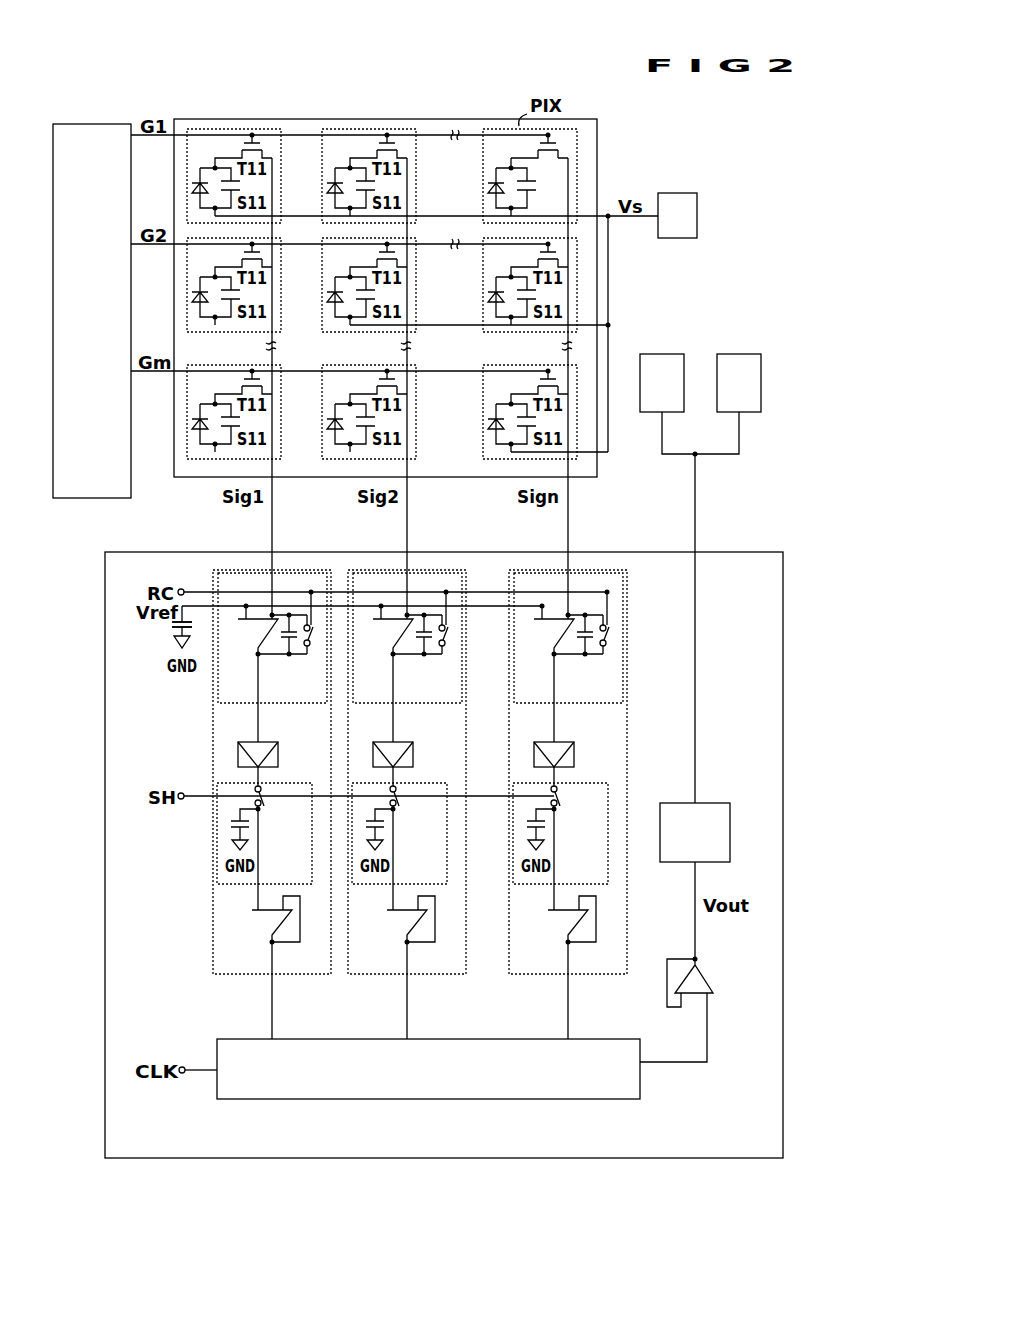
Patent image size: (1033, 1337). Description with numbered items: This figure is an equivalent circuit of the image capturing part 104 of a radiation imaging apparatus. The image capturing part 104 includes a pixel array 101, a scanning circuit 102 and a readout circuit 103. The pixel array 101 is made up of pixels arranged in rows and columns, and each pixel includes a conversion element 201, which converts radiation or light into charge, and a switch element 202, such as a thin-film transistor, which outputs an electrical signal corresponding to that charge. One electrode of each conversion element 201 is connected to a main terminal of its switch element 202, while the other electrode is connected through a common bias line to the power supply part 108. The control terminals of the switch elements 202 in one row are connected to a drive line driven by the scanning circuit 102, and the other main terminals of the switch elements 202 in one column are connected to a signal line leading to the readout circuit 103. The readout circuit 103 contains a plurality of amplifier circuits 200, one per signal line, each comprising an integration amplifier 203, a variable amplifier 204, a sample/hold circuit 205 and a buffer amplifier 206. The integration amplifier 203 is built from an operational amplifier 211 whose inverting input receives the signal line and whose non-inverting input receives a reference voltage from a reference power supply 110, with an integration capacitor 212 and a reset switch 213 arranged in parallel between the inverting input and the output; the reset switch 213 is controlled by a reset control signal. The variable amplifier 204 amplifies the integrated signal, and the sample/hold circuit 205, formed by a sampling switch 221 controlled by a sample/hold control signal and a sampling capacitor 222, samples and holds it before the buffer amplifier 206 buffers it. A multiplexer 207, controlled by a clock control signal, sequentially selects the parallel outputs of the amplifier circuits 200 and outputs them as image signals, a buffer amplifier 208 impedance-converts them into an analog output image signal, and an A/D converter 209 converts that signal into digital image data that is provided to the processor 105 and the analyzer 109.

The pixel array 101 is at (323, 118).
The scanning circuit 102 is at (88, 123).
The readout circuit 103 is at (200, 1160).
The image capturing part 104 is at (73, 1127).
The processor 105 is at (662, 355).
The power supply part 108 is at (680, 194).
The analyzer 109 is at (737, 355).
The reference power supply 110 is at (168, 636).
The amplifier circuit 200 is at (243, 977).
The conversion element 201 is at (506, 164).
The switch element 202 is at (561, 153).
The integration amplifier 203 is at (295, 704).
The variable amplifier 204 is at (280, 756).
The sample/hold circuit 205 is at (233, 780).
The buffer amplifier 206 is at (262, 925).
The multiplexer 207 is at (290, 1100).
The buffer amplifier 208 is at (707, 985).
The A/D converter 209 is at (712, 803).
The operational amplifier 211 is at (246, 640).
The integration capacitor 212 is at (283, 648).
The reset switch 213 is at (310, 655).
The sampling switch 221 is at (264, 808).
The sampling capacitor 222 is at (255, 832).